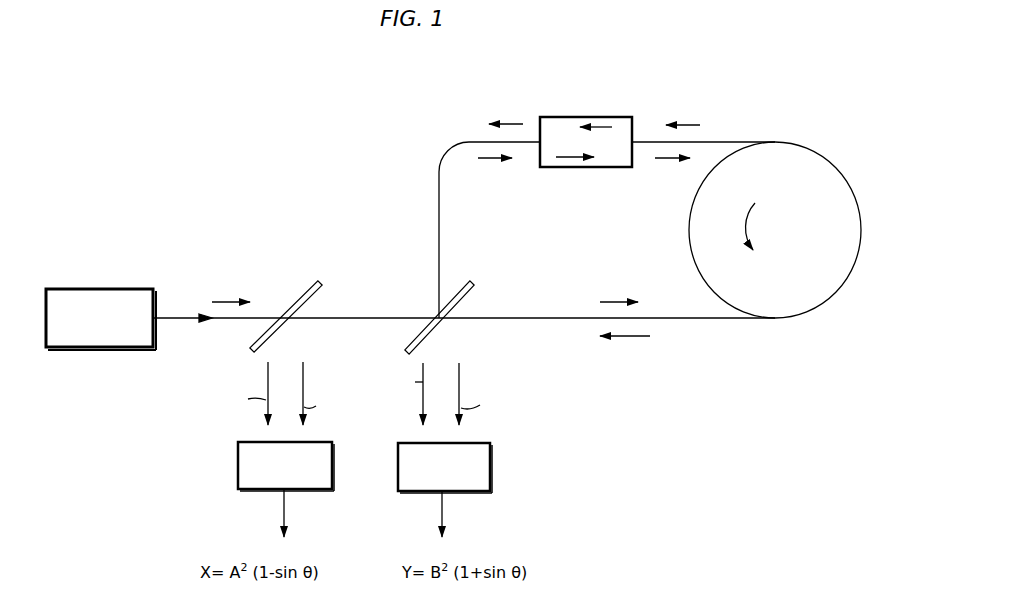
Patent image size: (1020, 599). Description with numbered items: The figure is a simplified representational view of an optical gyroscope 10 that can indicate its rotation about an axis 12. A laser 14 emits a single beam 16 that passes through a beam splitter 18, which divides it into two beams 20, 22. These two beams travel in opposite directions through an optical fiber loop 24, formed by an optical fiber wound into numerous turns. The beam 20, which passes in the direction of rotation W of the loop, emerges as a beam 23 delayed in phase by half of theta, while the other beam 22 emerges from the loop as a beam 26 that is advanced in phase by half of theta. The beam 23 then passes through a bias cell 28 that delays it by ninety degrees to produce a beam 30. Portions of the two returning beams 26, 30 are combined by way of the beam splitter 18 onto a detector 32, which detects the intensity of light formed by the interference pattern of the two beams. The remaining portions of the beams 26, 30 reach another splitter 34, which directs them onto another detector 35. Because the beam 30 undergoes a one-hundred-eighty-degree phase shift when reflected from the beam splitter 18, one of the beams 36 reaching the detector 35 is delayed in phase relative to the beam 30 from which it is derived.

The optical gyroscope 10 is at (788, 216).
The axis 12 is at (777, 234).
The laser 14 is at (80, 289).
The single beam 16 is at (168, 313).
The beam splitter 18 is at (473, 287).
The beam 20 is at (600, 302).
The beam 22 is at (516, 160).
The beam 23 is at (700, 124).
The optical fiber loop 24 is at (860, 209).
The beam 26 is at (640, 336).
The bias cell 28 is at (586, 117).
The beam 30 is at (521, 123).
The detector 32 is at (490, 467).
The splitter 34 is at (303, 288).
The detector 35 is at (238, 472).
The beam 36 is at (266, 372).